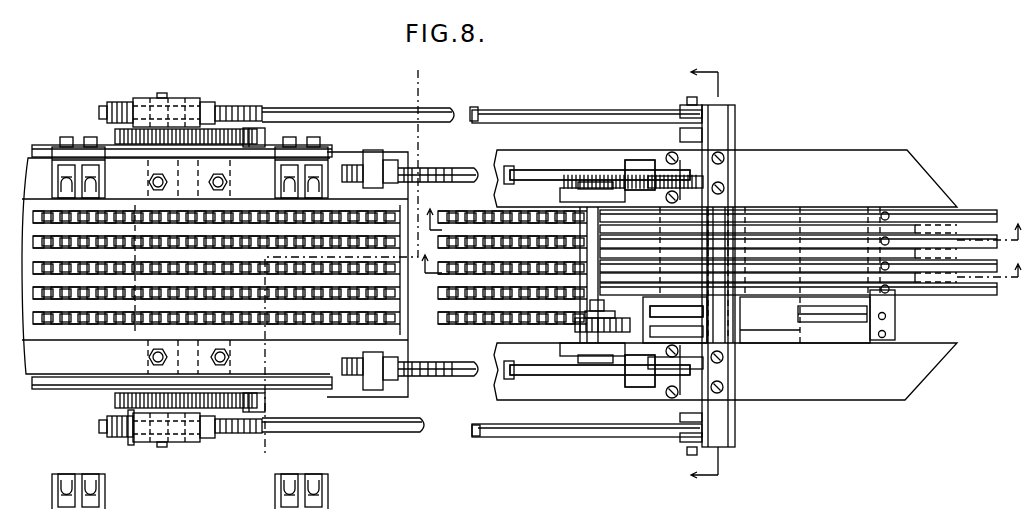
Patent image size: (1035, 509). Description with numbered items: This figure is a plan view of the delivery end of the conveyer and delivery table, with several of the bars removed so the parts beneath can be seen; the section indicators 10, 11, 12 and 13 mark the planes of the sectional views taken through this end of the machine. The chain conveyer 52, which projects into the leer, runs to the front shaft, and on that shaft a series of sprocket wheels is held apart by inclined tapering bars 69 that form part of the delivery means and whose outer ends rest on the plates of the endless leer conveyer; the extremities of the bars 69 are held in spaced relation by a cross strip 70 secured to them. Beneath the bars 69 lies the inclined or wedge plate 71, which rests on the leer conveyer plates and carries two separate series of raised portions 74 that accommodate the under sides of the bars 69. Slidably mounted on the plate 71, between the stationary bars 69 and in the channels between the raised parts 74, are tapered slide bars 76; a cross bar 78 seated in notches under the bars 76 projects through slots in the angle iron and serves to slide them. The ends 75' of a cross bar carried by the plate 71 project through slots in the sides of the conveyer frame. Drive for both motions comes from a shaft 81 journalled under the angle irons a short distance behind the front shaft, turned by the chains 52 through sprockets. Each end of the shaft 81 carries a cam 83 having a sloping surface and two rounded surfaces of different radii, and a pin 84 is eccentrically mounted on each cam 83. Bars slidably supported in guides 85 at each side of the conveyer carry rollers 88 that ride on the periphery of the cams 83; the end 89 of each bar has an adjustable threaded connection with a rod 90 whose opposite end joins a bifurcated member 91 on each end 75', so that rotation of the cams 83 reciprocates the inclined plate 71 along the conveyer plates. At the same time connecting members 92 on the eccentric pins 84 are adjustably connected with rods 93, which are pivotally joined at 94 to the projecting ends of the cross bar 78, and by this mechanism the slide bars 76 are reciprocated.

The section line 10- 10 is at (418, 70).
The section line 11- 11 is at (722, 215).
The section line 12- 12 is at (720, 259).
The section line 13- 13 is at (686, 277).
The chain conveyer 52 is at (525, 325).
The inclined tapering bars 69 is at (741, 264).
The cross strip 70 is at (897, 314).
The inclined plate 71 is at (777, 328).
The raised portions 74 is at (690, 321).
The ends of cross bar 75' is at (600, 300).
The slidably tapered bars 76 is at (823, 277).
The cross bar 78 is at (727, 328).
The shaft 81 is at (206, 101).
The cam 83 is at (225, 128).
The pin 84 is at (171, 97).
The guides 85 is at (76, 143).
The rollers 88 is at (118, 131).
The end of bar 89 is at (381, 163).
The rod 90 is at (470, 163).
The bifurcated member 91 is at (630, 163).
The connecting members 92 is at (140, 440).
The rods 93 is at (362, 100).
The pivotal joint 94 is at (697, 110).